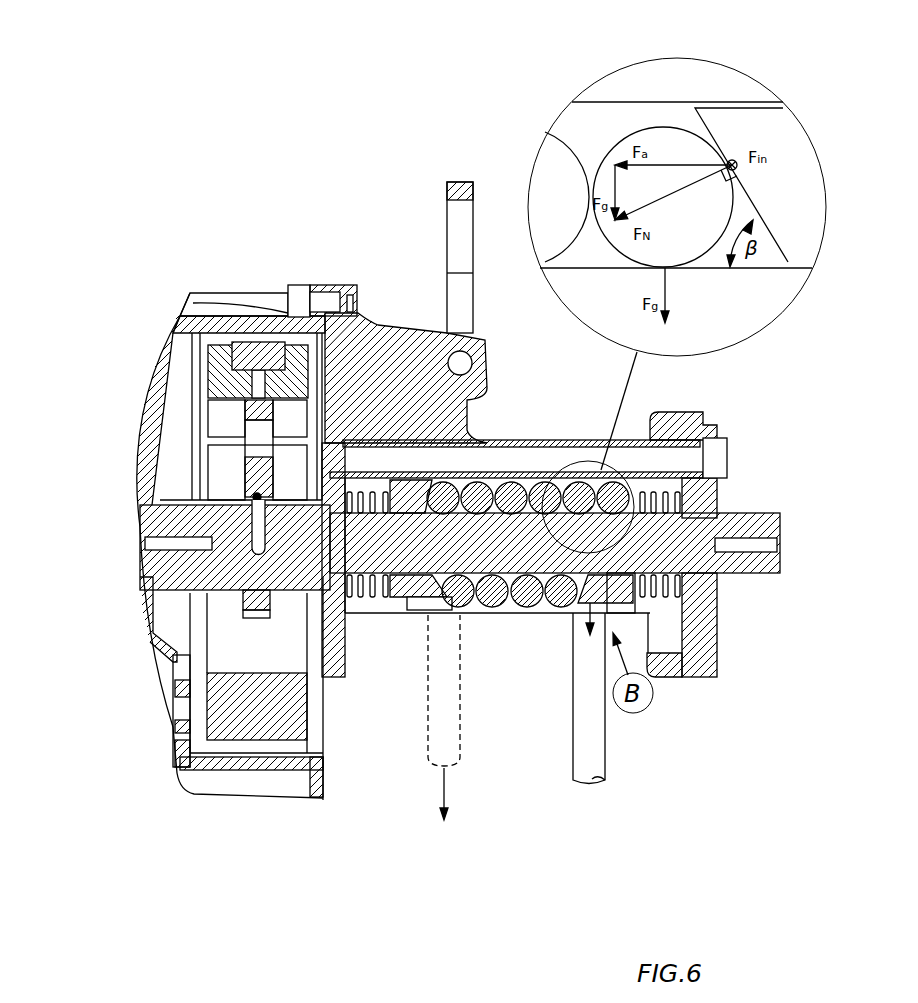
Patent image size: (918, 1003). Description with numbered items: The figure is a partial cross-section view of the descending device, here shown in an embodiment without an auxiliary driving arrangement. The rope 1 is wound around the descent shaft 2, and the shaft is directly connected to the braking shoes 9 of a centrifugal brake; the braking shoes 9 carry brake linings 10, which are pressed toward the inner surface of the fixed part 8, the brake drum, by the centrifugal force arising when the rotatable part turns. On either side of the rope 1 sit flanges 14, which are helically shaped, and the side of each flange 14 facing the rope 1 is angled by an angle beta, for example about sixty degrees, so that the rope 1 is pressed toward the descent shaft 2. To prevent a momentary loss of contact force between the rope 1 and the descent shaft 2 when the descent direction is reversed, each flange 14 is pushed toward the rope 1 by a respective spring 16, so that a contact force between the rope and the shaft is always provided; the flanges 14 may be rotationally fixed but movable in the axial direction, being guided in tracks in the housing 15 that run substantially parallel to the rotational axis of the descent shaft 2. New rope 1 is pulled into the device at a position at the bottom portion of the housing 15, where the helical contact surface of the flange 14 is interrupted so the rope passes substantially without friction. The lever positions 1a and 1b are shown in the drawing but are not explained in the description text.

The rope 1 is at (667, 143).
The actuating lever in first position 1a is at (440, 737).
The actuating lever in second position 1b is at (597, 765).
The descent shaft 2 is at (140, 565).
The fixed part 8 is at (258, 770).
The braking shoes 9 is at (178, 720).
The brake linings 10 is at (240, 358).
The flange 14 is at (330, 440).
The housing 15 is at (532, 470).
The spring 16 is at (320, 653).